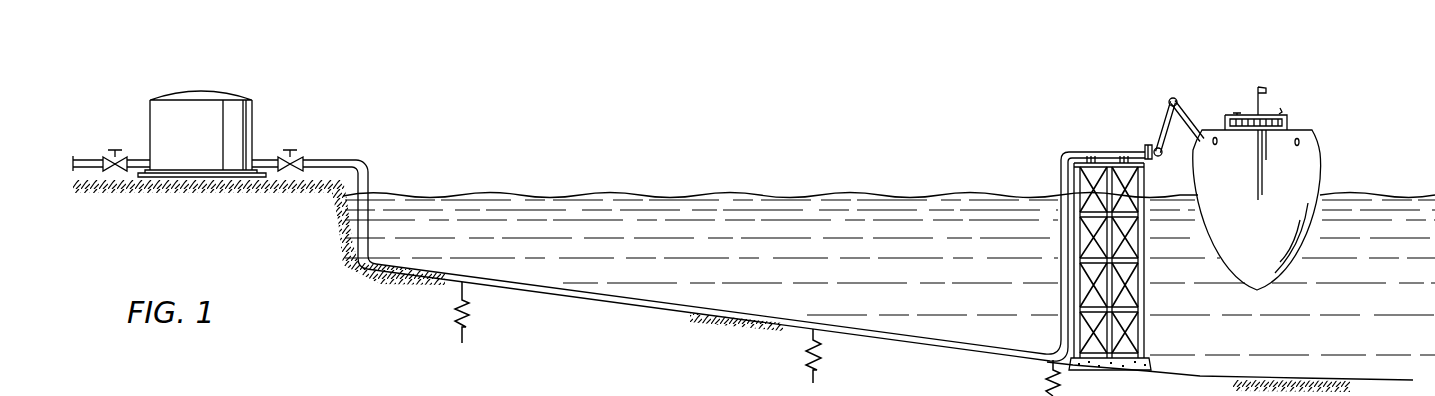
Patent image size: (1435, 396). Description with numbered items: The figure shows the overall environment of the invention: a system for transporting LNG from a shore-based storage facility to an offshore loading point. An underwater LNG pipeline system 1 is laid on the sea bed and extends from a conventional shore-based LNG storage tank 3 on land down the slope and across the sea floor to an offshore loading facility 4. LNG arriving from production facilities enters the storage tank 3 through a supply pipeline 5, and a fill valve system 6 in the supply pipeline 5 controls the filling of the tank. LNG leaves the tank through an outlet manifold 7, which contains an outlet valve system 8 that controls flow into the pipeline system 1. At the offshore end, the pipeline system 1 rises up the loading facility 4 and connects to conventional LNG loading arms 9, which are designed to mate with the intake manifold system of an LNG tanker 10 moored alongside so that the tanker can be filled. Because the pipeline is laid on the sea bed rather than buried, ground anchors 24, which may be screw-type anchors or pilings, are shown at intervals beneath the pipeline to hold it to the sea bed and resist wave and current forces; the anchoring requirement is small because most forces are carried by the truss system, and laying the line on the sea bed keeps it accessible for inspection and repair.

The underwater LNG pipeline system 1 is at (805, 308).
The shore-based LNG storage tank 3 is at (213, 90).
The offshore loading facility 4 is at (1142, 178).
The supply pipeline 5 is at (91, 158).
The fill valve system 6 is at (128, 157).
The outlet manifold 7 is at (270, 157).
The outlet valve system 8 is at (300, 157).
The LNG loading arms 9 is at (1172, 99).
The LNG tanker 10 is at (1320, 163).
The ground anchors 24 is at (467, 323).